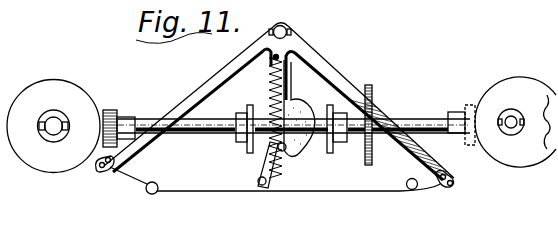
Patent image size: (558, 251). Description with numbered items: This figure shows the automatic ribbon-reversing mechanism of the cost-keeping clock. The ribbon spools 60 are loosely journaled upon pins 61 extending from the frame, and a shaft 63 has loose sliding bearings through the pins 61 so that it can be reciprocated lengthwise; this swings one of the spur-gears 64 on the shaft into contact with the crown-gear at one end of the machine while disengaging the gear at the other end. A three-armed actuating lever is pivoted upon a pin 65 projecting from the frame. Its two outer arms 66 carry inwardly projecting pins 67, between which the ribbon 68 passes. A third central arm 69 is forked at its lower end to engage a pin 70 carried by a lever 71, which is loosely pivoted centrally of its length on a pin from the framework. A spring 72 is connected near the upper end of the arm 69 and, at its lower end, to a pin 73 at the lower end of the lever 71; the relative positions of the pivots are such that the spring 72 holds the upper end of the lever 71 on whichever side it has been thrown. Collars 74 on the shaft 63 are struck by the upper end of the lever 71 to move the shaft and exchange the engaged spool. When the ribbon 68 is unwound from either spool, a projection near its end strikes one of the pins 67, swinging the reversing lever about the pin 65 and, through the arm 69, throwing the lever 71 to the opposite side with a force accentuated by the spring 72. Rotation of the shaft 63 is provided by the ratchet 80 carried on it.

The spool 60 is at (43, 91).
The pin 61 is at (52, 134).
The shaft 63 is at (423, 109).
The spur-gear 64 is at (109, 130).
The pin 65 is at (284, 27).
The outer arm 66 is at (183, 101).
The pin 67 is at (112, 176).
The ribbon 68 is at (393, 193).
The central arm 69 is at (282, 68).
The pin 70 is at (273, 188).
The lever 71 is at (301, 146).
The spring 72 is at (264, 158).
The pin 73 is at (261, 185).
The collar 74 is at (248, 112).
The ratchet 80 is at (373, 91).